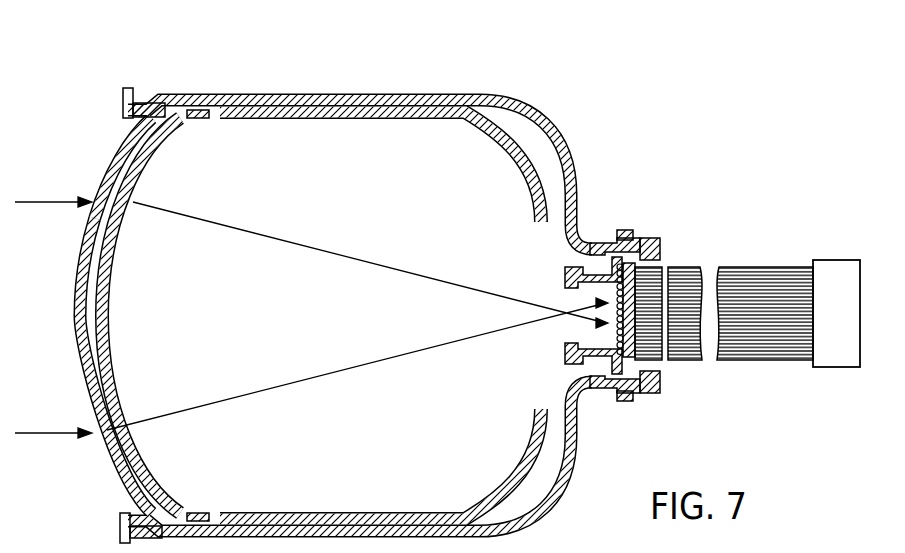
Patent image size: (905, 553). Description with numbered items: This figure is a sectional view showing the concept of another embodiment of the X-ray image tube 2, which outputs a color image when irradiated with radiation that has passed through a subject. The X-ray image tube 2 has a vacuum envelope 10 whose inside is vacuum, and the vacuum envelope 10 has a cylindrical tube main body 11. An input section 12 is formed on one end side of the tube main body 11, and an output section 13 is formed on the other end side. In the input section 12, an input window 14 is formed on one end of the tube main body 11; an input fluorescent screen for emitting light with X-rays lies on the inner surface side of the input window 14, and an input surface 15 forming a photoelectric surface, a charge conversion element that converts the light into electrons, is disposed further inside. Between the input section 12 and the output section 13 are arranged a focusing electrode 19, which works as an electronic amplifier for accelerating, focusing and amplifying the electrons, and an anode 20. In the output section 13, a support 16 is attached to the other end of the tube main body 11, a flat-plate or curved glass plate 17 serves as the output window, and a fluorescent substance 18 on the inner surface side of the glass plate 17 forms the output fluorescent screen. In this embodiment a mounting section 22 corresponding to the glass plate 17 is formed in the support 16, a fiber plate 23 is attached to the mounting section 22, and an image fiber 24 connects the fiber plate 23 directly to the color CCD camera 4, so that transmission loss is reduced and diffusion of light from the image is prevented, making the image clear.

The X-ray image tube 2 is at (537, 81).
The color CCD camera 4 is at (837, 262).
The vacuum envelope 10 is at (564, 134).
The tube main body 11 is at (290, 95).
The input section 12 is at (114, 155).
The output section 13 is at (648, 242).
The input window 14 is at (73, 278).
The input surface 15 is at (93, 330).
The support 16 is at (640, 388).
The glass plate 17 is at (622, 240).
The fluorescent substance 18 is at (612, 348).
The focusing electrode 19 is at (398, 107).
The anode 20 is at (592, 245).
The mounting section 22 is at (660, 263).
The fiber plate 23 is at (660, 362).
The image fiber 24 is at (763, 352).